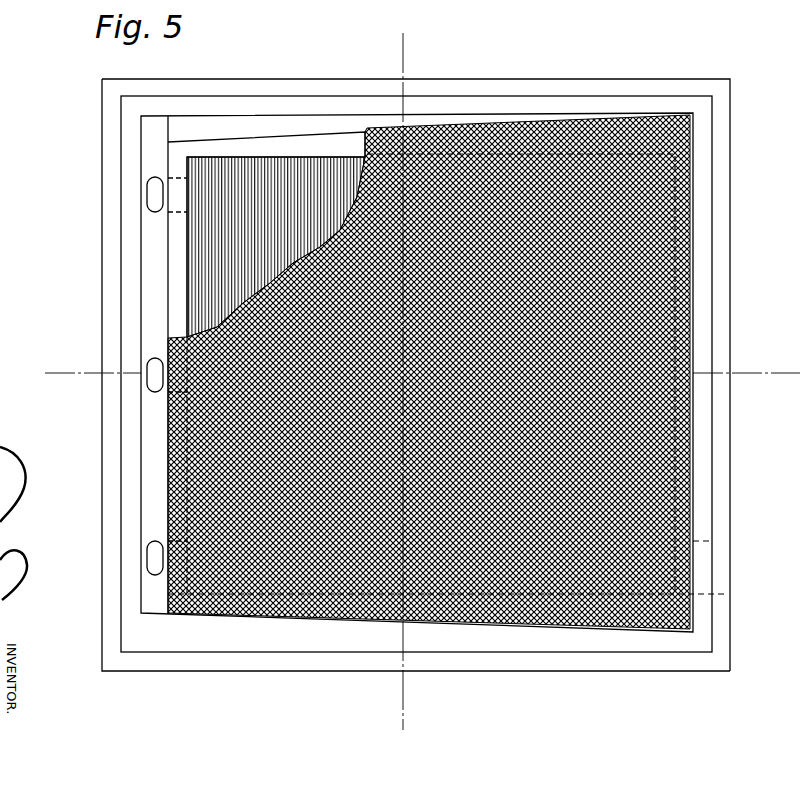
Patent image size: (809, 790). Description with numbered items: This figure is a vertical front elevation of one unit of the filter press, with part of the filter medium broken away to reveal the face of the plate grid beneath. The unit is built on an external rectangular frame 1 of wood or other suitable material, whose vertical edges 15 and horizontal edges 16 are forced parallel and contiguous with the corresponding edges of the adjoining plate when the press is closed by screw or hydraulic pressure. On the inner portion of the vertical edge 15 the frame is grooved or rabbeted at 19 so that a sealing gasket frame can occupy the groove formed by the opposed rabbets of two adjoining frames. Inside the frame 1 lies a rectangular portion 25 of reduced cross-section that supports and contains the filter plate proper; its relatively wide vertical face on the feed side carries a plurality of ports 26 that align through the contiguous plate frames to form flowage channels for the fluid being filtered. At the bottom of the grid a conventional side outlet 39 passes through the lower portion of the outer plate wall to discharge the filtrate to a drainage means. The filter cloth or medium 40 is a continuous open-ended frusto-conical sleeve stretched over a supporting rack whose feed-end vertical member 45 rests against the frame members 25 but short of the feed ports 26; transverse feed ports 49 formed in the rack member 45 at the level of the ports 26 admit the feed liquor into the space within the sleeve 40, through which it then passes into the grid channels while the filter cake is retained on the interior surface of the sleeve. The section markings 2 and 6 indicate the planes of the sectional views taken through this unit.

The external rectangular frame 1 is at (489, 79).
The vertical edges 15 is at (108, 202).
The horizontal edges 16 is at (588, 83).
The rabbet 19 is at (130, 163).
The rectangular portion of reduced cross-section 25 is at (228, 128).
The ports 26 is at (150, 196).
The side outlet 39 is at (703, 576).
The filter cloth or medium 40 is at (693, 243).
The feed-end vertical member 45 is at (173, 275).
The transverse feed ports 49 is at (177, 202).
The section line 2- 2 is at (68, 365).
The section line 6- 6 is at (411, 49).